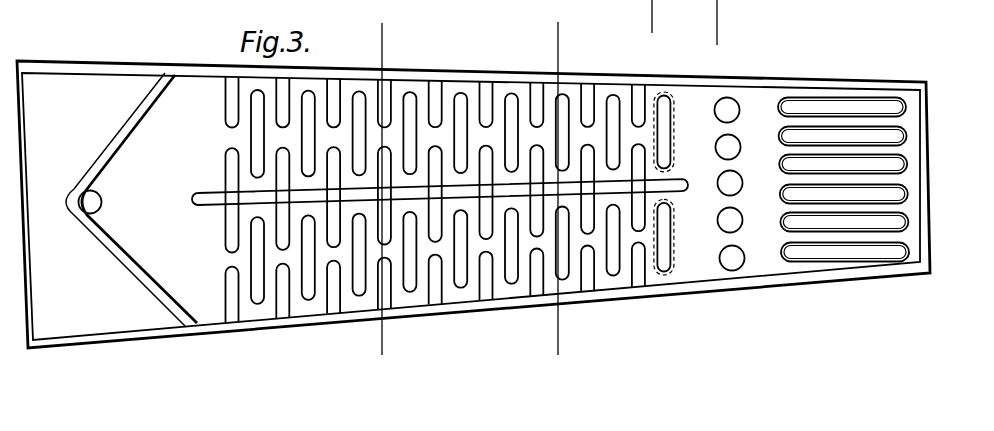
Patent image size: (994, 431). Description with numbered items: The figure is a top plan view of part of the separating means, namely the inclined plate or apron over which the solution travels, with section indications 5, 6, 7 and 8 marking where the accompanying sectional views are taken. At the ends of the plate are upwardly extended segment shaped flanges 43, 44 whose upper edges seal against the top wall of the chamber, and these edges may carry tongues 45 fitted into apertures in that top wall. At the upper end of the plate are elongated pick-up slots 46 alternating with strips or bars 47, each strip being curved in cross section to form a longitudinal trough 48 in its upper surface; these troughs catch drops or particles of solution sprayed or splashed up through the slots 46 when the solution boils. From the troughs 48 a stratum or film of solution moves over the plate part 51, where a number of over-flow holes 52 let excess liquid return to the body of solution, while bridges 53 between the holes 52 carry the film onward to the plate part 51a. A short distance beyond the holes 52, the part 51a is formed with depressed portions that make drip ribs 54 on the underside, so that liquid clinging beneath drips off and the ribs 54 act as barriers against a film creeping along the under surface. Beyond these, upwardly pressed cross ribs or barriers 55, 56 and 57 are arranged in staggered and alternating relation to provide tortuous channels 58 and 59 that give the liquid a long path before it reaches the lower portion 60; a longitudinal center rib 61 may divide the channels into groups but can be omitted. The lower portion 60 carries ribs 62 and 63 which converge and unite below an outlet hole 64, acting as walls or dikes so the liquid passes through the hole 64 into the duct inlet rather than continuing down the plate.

The segment shaped flange 43 is at (30, 285).
The segment shaped flange 44 is at (930, 178).
The tongue 45 is at (50, 157).
The pick-up slot 46 is at (830, 130).
The strip 47 is at (779, 163).
The longitudinal trough 48 is at (853, 148).
The plate part 51 is at (755, 125).
The plate part 51a is at (690, 223).
The over-flow hole 52 is at (717, 183).
The bridge 53 is at (720, 249).
The drip rib 54 is at (673, 103).
The cross rib 55 is at (515, 113).
The cross rib 56 is at (487, 150).
The cross rib 57 is at (428, 103).
The tortuous channel 58 is at (343, 140).
The tortuous channel 59 is at (320, 87).
The lower portion 60 is at (160, 234).
The rib 61 is at (222, 206).
The rib 62 is at (120, 259).
The rib 63 is at (118, 136).
The outlet hole 64 is at (102, 200).
The section line 5 is at (665, 10).
The section line 6 is at (735, 15).
The section line 7 is at (357, 37).
The section line 8 is at (540, 47).